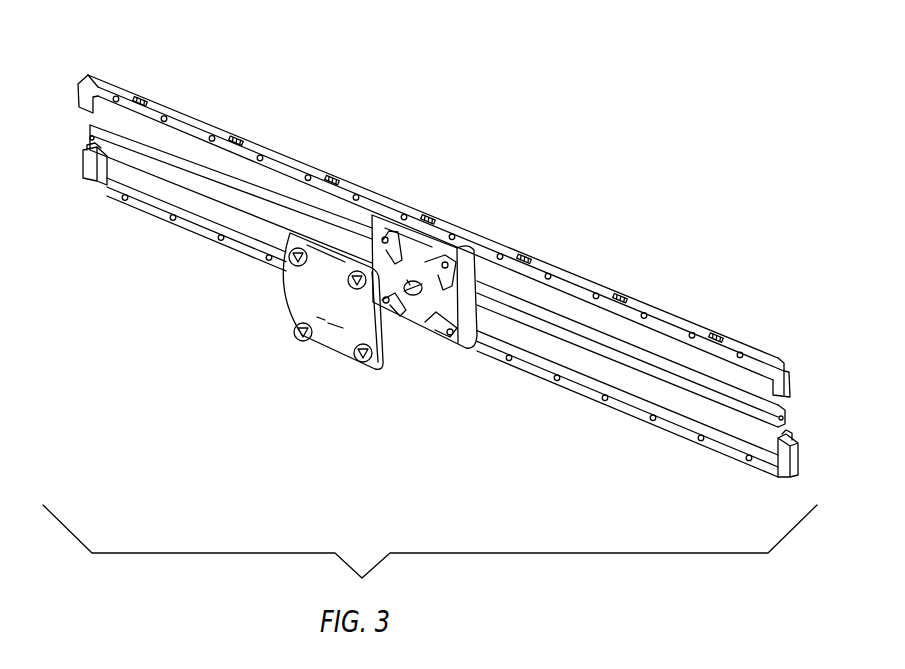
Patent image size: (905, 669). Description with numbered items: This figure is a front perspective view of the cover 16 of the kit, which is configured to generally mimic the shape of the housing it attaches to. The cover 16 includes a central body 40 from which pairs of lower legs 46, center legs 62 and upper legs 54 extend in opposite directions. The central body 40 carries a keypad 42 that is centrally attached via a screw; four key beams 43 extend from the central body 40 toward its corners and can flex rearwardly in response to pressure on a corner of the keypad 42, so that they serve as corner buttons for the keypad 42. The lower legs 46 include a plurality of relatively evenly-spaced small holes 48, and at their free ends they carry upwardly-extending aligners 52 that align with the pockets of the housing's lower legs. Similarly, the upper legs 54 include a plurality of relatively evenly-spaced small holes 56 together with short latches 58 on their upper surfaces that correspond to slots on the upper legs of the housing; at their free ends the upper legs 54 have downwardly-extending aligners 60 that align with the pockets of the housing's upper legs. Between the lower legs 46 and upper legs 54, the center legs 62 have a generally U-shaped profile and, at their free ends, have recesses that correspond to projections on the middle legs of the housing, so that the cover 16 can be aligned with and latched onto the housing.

The cover 16 is at (623, 222).
The central body 40 is at (412, 255).
The keypad 42 is at (335, 335).
The key beams 43 is at (388, 240).
The lower legs 46 is at (257, 250).
The small holes 48 is at (655, 418).
The aligners 52 is at (88, 162).
The upper legs 54 is at (285, 158).
The small holes 56 is at (597, 295).
The latches 58 is at (532, 262).
The aligners 60 is at (77, 107).
The center legs 62 is at (210, 190).